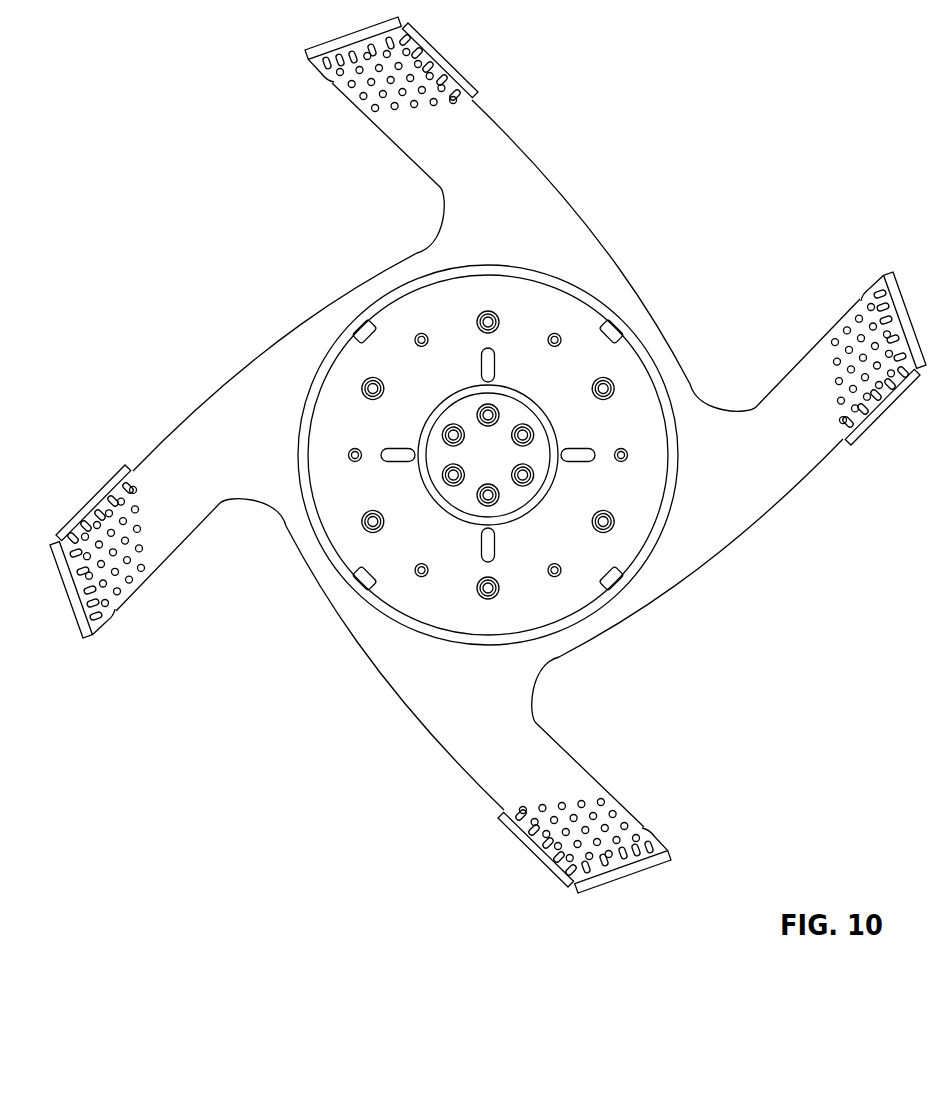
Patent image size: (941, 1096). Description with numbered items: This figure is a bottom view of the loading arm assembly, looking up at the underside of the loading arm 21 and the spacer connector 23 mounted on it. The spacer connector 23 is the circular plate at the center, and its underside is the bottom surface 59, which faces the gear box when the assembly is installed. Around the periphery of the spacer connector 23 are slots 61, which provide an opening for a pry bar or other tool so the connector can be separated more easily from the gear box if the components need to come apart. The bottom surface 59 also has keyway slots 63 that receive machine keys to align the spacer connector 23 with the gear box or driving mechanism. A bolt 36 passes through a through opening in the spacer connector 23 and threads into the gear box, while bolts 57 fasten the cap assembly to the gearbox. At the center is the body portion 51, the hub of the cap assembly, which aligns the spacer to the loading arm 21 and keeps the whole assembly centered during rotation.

The loading arm 21 is at (742, 540).
The spacer connector 23 is at (637, 398).
The bolt 36 is at (488, 600).
The body portion 51 is at (455, 497).
The bolts 57 is at (441, 476).
The bottom surface 59 is at (476, 378).
The slots 61 is at (610, 580).
The keyway slots 63 is at (497, 546).